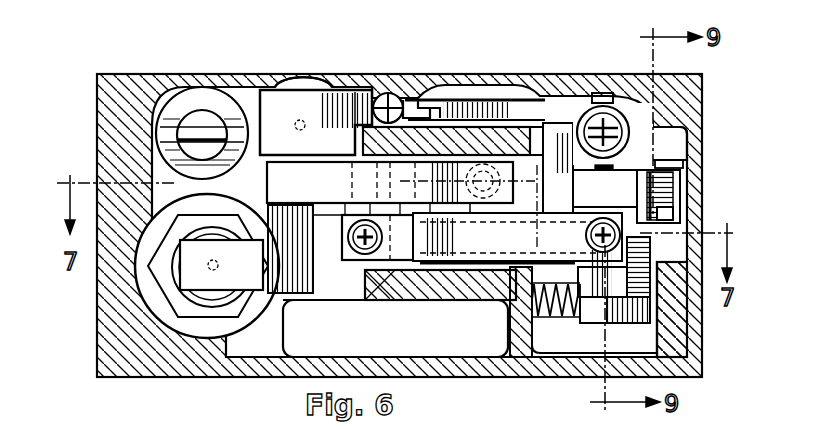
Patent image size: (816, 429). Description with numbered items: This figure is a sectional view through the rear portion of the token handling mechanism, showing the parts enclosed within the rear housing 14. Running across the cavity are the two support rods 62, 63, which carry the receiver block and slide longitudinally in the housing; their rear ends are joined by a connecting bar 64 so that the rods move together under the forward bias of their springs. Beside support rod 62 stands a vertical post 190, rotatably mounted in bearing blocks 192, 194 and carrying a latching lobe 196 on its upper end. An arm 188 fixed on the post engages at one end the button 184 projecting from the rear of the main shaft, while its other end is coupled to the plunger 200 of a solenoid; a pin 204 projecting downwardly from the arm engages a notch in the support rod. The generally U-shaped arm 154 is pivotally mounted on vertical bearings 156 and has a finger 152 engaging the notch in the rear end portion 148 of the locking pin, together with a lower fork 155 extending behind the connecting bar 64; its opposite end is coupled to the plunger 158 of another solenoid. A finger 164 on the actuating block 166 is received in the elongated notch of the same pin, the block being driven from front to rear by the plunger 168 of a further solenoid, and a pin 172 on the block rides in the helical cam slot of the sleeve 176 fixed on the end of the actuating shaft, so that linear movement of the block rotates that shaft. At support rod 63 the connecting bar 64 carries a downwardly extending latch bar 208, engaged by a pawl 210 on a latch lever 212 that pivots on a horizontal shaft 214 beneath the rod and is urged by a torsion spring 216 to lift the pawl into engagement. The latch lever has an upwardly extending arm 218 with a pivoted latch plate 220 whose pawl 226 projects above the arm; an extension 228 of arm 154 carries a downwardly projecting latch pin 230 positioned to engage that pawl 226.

The rear housing 14 is at (103, 95).
The support rod 62 is at (358, 255).
The support rod 63 is at (580, 210).
The connecting bar 64 is at (398, 252).
The rear end portion 148 is at (393, 102).
The finger 152 is at (410, 108).
The arm 154 is at (467, 108).
The lower fork 155 is at (447, 266).
The vertical bearings 156 is at (500, 106).
The plunger 158 is at (592, 110).
The finger 164 is at (370, 92).
The actuating block 166 is at (315, 100).
The plunger 168 is at (295, 122).
The pin 172 is at (214, 130).
The sleeve 176 is at (193, 100).
The button 184 is at (517, 205).
The arm 188 is at (270, 171).
The vertical post 190 is at (368, 142).
The bearing block 192 is at (527, 131).
The bearing block 194 is at (365, 282).
The latching lobe 196 is at (432, 108).
The plunger 200 is at (218, 265).
The pin 204 is at (345, 212).
The latch bar 208 is at (597, 300).
The pawl 210 is at (637, 323).
The latch lever 212 is at (652, 315).
The horizontal shaft 214 is at (548, 312).
The torsion spring 216 is at (520, 307).
The arm 218 is at (640, 188).
The latch plate 220 is at (675, 213).
The pawl 226 is at (683, 165).
The extension 228 is at (670, 133).
The latch pin 230 is at (687, 152).